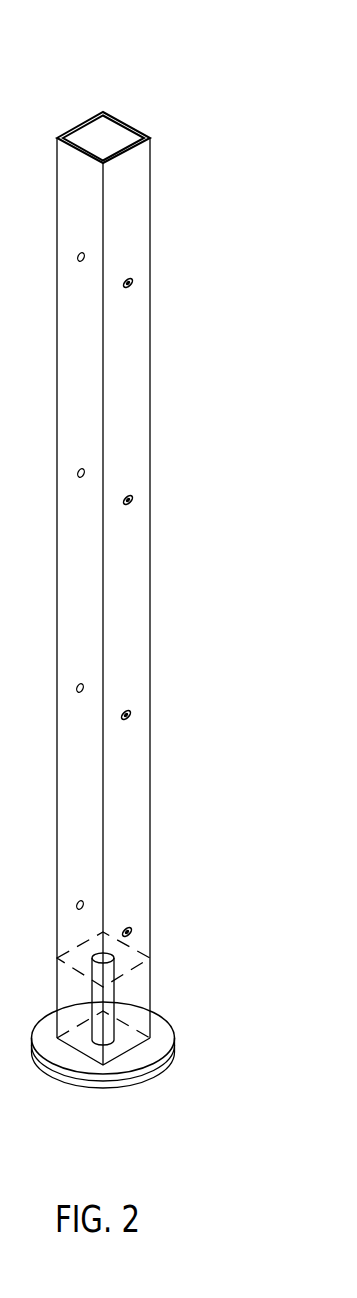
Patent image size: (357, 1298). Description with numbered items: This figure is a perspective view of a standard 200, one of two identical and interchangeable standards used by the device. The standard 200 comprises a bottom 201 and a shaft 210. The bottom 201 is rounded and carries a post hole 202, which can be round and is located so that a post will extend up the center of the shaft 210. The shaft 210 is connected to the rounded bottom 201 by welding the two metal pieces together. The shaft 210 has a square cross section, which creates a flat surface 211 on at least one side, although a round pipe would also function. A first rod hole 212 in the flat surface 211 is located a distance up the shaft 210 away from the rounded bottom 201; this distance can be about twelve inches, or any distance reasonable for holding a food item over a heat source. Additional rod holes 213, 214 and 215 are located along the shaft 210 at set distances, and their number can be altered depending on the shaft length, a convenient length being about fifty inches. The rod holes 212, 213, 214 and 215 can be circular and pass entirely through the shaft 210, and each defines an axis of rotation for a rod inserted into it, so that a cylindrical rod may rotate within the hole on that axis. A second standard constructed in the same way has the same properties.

The standard 200 is at (173, 69).
The bottom 201 is at (155, 1077).
The post hole 202 is at (110, 1043).
The shaft 210 is at (151, 589).
The flat surface 211 is at (128, 403).
The first rod hole 212 is at (130, 928).
The additional rod hole 213 is at (130, 711).
The additional rod hole 214 is at (131, 496).
The additional rod hole 215 is at (132, 279).